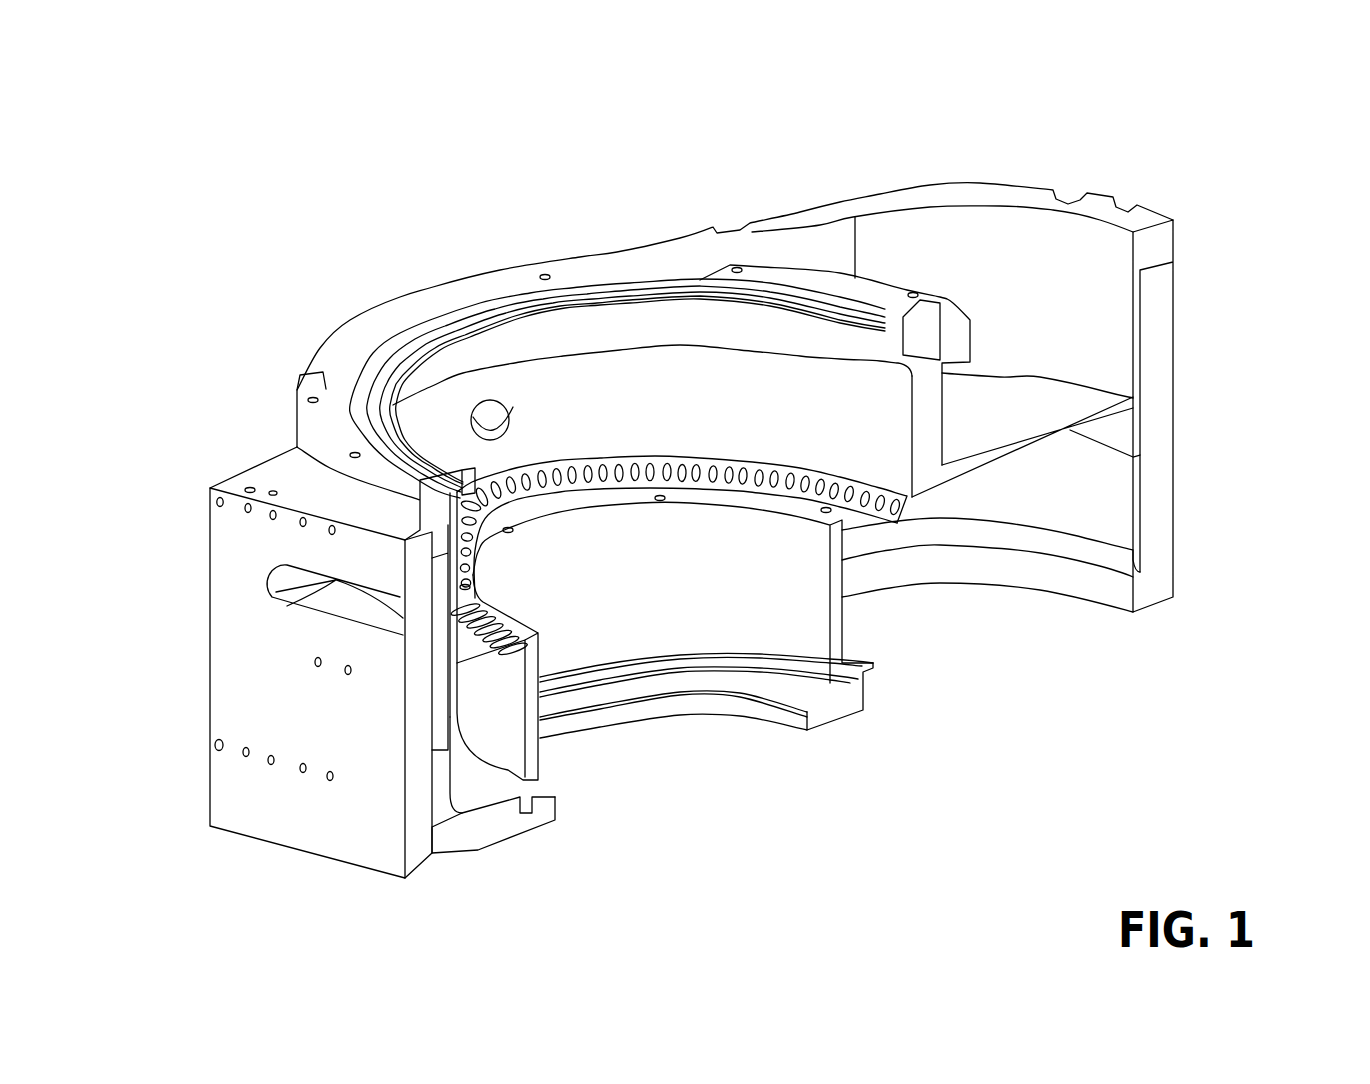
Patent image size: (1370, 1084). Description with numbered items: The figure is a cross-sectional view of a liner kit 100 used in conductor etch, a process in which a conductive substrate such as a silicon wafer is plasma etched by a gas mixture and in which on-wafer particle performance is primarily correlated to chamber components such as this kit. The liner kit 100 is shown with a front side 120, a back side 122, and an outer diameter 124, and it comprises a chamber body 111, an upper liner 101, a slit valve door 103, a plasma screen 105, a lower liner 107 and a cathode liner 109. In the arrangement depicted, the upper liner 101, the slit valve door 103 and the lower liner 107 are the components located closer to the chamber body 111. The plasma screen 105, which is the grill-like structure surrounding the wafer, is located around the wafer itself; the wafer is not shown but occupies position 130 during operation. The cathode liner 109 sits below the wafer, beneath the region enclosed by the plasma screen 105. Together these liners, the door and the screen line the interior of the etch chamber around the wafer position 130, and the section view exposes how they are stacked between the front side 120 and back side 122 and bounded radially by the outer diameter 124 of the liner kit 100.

The liner kit 100 is at (258, 199).
The upper liner 101 is at (937, 200).
The slit valve door 103 is at (436, 612).
The plasma screen 105 is at (593, 490).
The lower liner 107 is at (954, 516).
The cathode liner 109 is at (639, 630).
The chamber body 111 is at (371, 755).
The front side 120 is at (661, 163).
The back side 122 is at (700, 847).
The outer diameter 124 is at (1240, 481).
The wafer position 130 is at (685, 520).